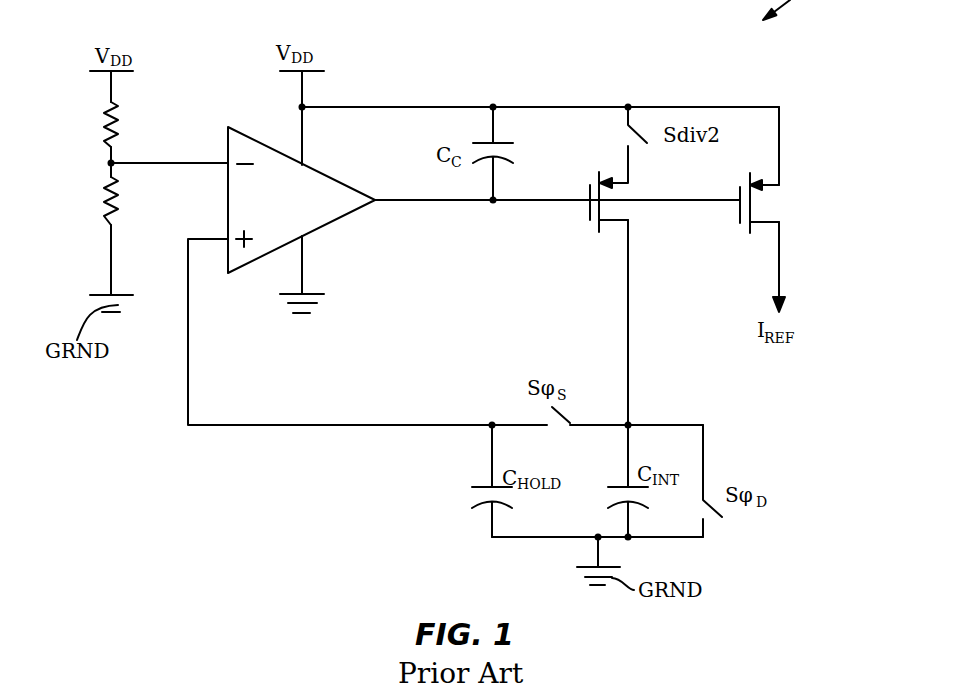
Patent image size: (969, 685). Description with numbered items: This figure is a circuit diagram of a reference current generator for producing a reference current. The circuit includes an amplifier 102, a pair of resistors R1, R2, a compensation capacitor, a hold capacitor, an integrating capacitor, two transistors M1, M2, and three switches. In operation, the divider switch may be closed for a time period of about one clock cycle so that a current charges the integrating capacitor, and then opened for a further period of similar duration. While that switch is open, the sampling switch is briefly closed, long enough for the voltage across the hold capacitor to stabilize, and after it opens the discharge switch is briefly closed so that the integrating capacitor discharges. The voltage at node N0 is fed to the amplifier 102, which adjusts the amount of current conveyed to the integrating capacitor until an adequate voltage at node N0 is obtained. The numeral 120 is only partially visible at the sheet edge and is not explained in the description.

The amplifier 102 is at (332, 223).
The reference numeral of adjoining drawing (partially visible) 120 is at (809, 679).
The resistor R1 is at (95, 124).
The resistor R2 is at (95, 201).
The transistor M1 is at (629, 202).
The transistor M2 is at (777, 203).
The node N0 is at (490, 422).